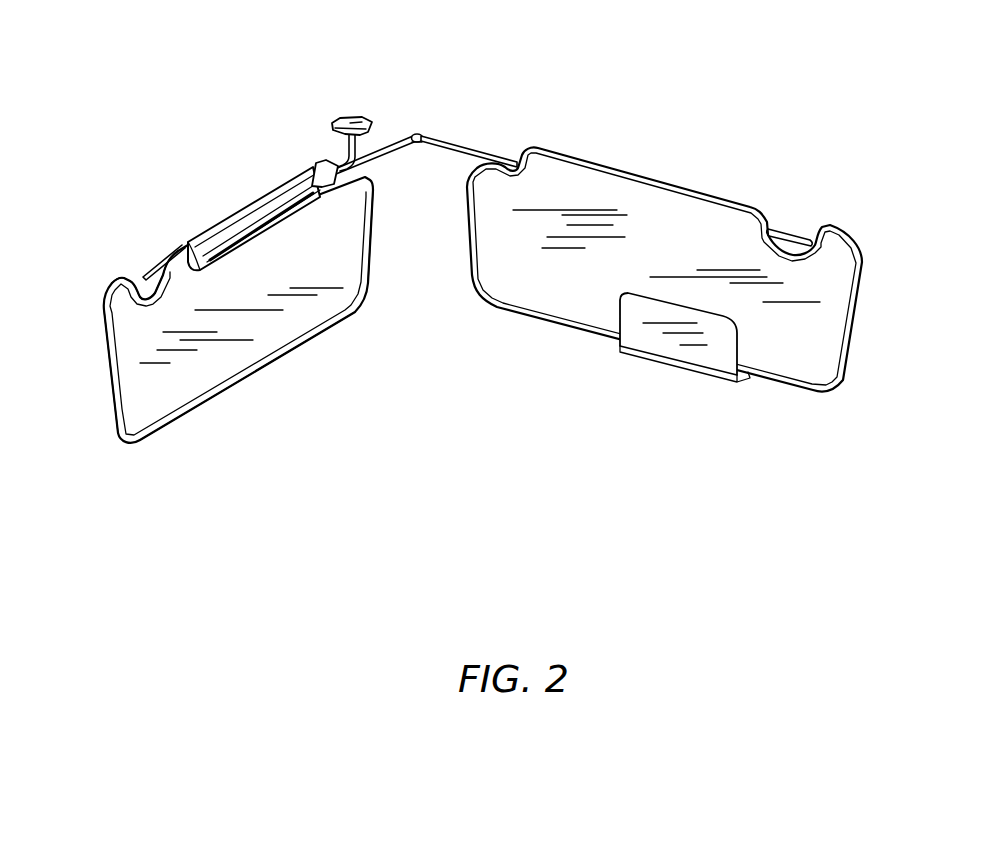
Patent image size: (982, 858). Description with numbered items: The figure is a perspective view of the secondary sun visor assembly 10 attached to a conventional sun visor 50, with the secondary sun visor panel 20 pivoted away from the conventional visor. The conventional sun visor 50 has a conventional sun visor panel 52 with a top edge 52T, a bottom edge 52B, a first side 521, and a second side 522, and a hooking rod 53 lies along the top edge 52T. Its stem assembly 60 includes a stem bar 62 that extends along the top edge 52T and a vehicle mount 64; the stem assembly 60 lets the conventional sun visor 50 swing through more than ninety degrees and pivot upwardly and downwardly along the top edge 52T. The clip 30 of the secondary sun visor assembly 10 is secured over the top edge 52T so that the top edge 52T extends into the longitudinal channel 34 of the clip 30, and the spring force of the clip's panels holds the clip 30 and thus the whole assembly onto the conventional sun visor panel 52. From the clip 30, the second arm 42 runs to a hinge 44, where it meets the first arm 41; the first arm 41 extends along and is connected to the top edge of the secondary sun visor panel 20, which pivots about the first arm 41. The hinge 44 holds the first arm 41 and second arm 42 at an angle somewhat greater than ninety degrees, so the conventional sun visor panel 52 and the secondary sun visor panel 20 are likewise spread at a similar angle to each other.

The secondary sun visor assembly 10 is at (484, 466).
The secondary sun visor panel 20 is at (857, 330).
The clip 30 is at (222, 215).
The longitudinal channel 34 is at (183, 248).
The first arm 41 is at (455, 141).
The second arm 42 is at (392, 154).
The hinge 44 is at (419, 134).
The conventional sun visor 50 is at (250, 329).
The conventional sun visor panel 52 is at (112, 418).
The top edge 52T is at (122, 280).
The hooking rod 53 is at (150, 267).
The first side 521 is at (372, 247).
The second side 522 is at (105, 352).
The bottom edge 52B is at (187, 415).
The stem assembly 60 is at (392, 104).
The stem bar 62 is at (350, 151).
The vehicle mount 64 is at (353, 121).